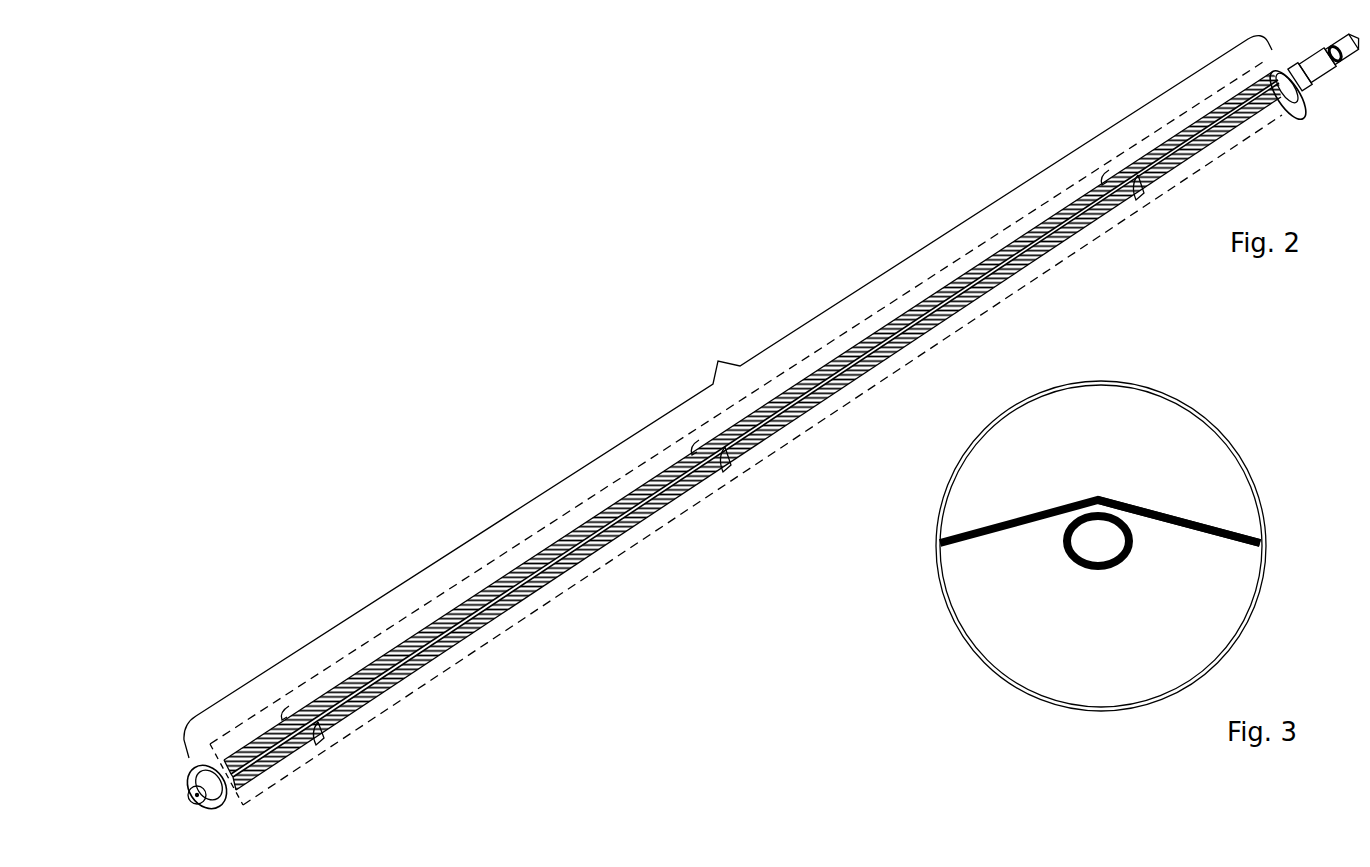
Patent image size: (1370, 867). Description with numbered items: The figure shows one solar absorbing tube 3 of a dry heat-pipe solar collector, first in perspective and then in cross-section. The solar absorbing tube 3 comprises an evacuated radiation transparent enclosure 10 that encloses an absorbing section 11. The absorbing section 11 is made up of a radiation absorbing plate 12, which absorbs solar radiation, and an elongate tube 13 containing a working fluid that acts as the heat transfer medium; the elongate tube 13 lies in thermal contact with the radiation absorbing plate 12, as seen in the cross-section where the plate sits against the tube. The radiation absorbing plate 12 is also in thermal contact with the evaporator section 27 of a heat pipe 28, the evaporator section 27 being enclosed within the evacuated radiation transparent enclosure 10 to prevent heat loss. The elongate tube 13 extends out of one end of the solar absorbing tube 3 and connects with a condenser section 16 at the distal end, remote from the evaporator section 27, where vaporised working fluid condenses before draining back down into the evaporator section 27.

In FIG. 2, the solar absorbing tube 3 is at (385, 710).
In FIG. 3, the solar absorbing tube 3 is at (1153, 348).
In FIG. 3, the evacuated radiation transparent enclosure 10 is at (1200, 411).
In FIG. 3, the absorbing section 11 is at (1032, 485).
In FIG. 3, the radiation absorbing plate 12 is at (1163, 515).
In FIG. 3, the elongate tube 13 is at (1100, 571).
In FIG. 2, the condenser section 16 is at (1347, 50).
In FIG. 2, the evaporator section 27 is at (718, 361).
In FIG. 2, the heat pipe 28 is at (1280, 110).